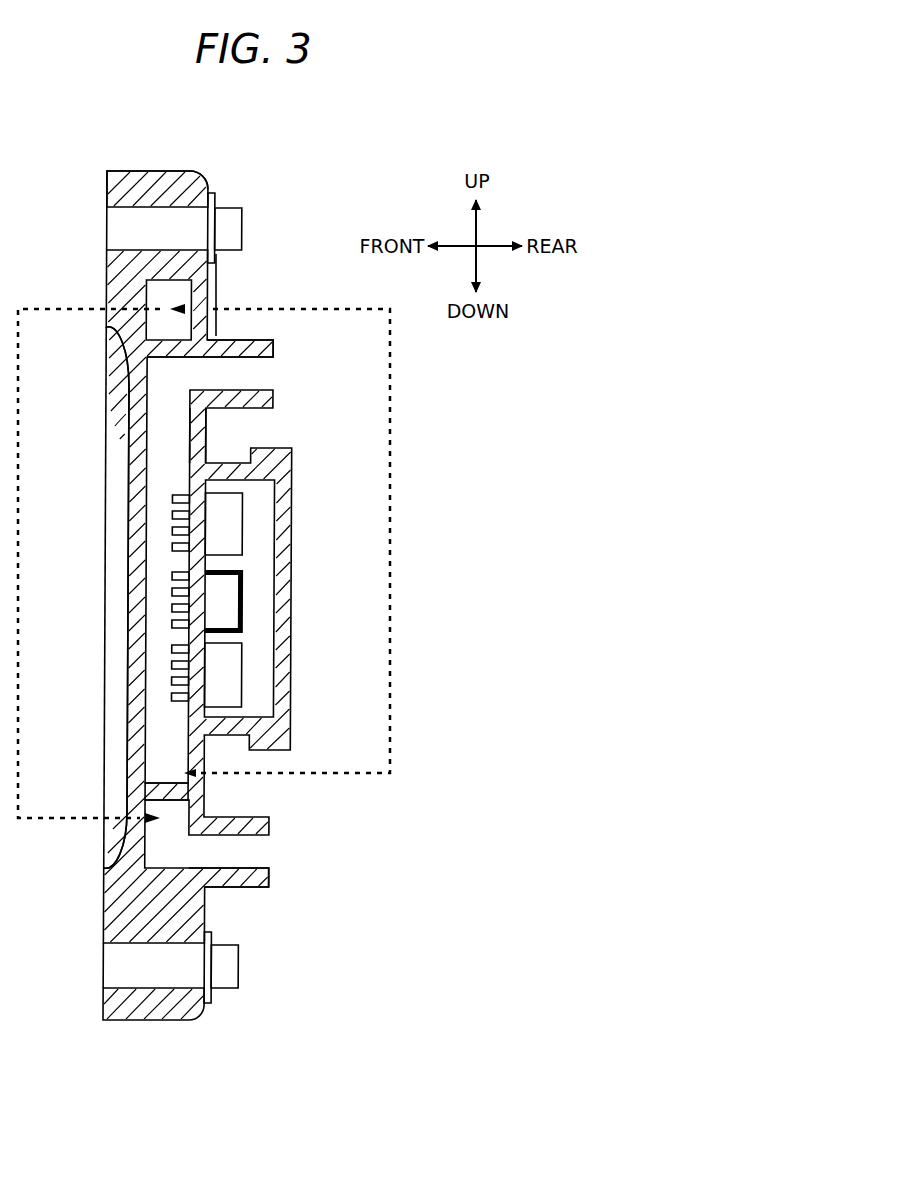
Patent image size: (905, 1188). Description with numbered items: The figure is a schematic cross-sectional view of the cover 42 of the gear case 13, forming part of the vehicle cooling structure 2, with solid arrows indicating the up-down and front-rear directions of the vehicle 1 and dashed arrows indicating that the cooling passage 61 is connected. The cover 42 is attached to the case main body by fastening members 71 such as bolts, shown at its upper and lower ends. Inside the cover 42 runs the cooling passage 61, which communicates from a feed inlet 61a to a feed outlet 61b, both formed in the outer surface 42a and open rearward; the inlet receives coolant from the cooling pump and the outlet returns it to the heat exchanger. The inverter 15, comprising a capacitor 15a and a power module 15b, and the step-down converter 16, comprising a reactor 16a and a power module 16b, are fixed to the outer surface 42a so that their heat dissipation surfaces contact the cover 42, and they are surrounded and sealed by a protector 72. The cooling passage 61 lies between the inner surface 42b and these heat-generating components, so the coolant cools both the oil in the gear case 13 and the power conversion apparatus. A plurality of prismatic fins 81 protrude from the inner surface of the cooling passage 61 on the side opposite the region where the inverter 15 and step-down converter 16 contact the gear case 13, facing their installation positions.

The vehicle 1 is at (291, 147).
The vehicle cooling structure 2 is at (326, 289).
The gear case 13 is at (160, 170).
The cover 42 is at (197, 178).
The outer surface 42a is at (208, 423).
The inner surface 42b is at (128, 505).
The cooling passage 61 is at (155, 295).
The feed inlet 61a is at (273, 387).
The feed outlet 61b is at (271, 868).
The fastening members 71 is at (243, 228).
The protector 72 is at (290, 698).
The fins 81 is at (172, 548).
The inverter 15 is at (294, 536).
The capacitor 15a is at (242, 520).
The power module 15b is at (243, 573).
The step-down converter 16 is at (293, 644).
The reactor 16a is at (242, 665).
The power module 16b is at (243, 630).